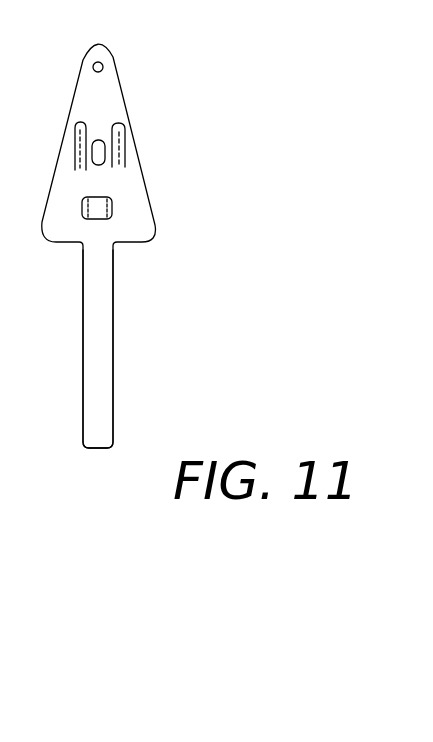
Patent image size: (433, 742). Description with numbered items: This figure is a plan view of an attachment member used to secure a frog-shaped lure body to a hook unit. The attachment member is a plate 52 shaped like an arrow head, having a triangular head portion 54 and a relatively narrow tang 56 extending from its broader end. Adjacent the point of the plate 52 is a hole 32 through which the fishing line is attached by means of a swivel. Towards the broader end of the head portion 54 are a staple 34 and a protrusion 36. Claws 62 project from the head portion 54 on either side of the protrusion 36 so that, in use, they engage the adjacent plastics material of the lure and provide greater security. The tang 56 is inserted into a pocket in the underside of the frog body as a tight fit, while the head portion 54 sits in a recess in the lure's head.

The plate 52 is at (146, 239).
The head portion 54 is at (122, 92).
The tang 56 is at (113, 342).
The hole 32 is at (104, 66).
The claws 62 is at (84, 138).
The protrusion 36 is at (104, 160).
The staple 34 is at (98, 211).